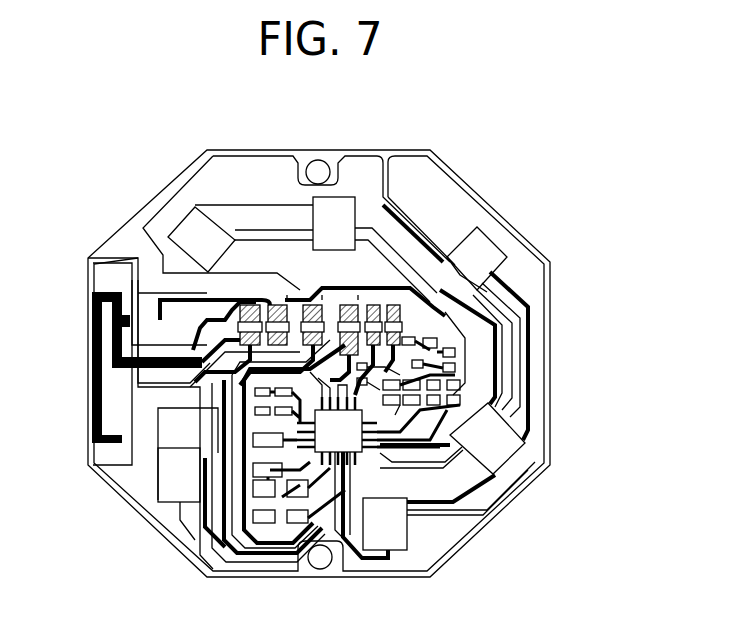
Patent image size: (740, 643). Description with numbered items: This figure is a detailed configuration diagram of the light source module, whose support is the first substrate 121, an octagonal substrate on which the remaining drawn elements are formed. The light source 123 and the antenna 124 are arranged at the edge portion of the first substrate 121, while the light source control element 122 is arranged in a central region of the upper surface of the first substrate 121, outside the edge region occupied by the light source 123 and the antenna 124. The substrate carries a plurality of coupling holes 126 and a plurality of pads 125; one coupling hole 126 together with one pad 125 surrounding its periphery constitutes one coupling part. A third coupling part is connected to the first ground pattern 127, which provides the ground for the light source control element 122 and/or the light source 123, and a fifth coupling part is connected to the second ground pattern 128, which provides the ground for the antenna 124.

The first substrate 121 is at (142, 212).
The light source control element 122 is at (328, 440).
The light source 123 is at (490, 240).
The antenna 124 is at (92, 402).
The plurality of pads 125 is at (390, 307).
The plurality of coupling holes 126 is at (245, 372).
The first ground pattern 127 is at (312, 358).
The second ground pattern 128 is at (115, 258).